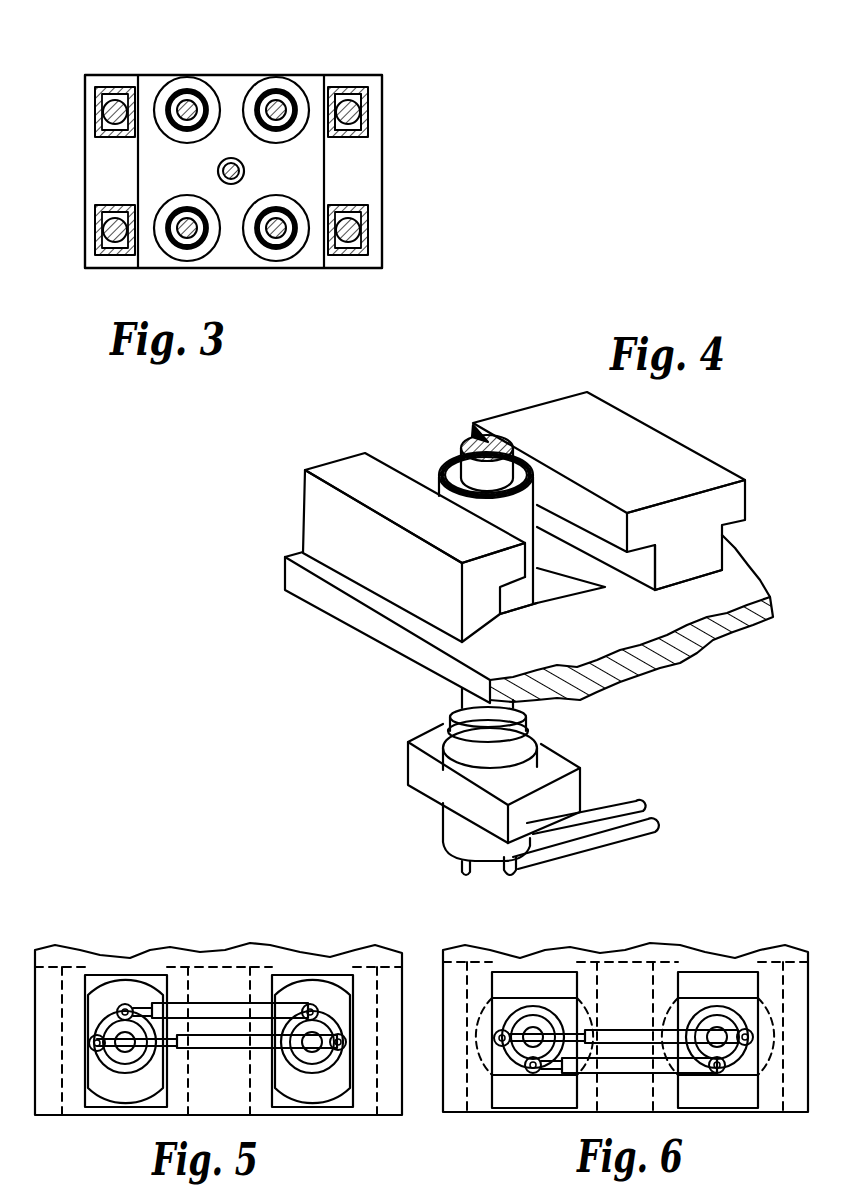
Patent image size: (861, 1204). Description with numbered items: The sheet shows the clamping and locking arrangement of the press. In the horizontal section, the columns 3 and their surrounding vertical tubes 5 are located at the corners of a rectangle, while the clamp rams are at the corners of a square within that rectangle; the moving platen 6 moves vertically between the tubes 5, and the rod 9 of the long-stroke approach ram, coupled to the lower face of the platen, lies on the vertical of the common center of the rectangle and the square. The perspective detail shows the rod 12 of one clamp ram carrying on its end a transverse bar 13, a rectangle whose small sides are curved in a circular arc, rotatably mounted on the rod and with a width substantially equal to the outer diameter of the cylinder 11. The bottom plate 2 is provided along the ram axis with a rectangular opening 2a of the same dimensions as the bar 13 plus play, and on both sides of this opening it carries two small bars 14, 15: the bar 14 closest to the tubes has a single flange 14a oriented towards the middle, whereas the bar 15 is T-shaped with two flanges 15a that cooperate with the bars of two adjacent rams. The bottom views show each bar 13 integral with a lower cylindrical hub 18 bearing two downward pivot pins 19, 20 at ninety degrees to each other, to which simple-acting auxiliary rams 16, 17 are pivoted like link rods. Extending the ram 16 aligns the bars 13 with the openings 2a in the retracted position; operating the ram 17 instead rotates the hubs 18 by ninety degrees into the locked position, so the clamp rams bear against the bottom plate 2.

In FIG. 4, the bottom plate 2 is at (370, 620).
In FIG. 5, the bottom plate 2 is at (295, 962).
In FIG. 6, the bottom plate 2 is at (662, 953).
In FIG. 4, the rectangular opening 2a is at (567, 599).
In FIG. 5, the rectangular opening 2a is at (120, 976).
In FIG. 6, the rectangular opening 2a is at (520, 969).
In FIG. 3, the column 3 is at (358, 125).
In FIG. 3, the vertical tube 5 is at (353, 89).
In FIG. 3, the moving platen 6 is at (236, 87).
In FIG. 3, the rod of approach ram 9 is at (233, 184).
In FIG. 3, the cylinder of clamp ram 11 is at (183, 101).
In FIG. 4, the cylinder of clamp ram 11 is at (437, 491).
In FIG. 3, the rod of clamp ram 12 is at (189, 104).
In FIG. 4, the rod of clamp ram 12 is at (474, 427).
In FIG. 4, the transverse bar 13 is at (557, 768).
In FIG. 5, the transverse bar 13 is at (325, 992).
In FIG. 6, the transverse bar 13 is at (563, 1002).
In FIG. 4, the small bar 14 is at (320, 505).
In FIG. 4, the flange 14a is at (510, 567).
In FIG. 4, the small bar 15 is at (707, 508).
In FIG. 4, the flange 15a is at (642, 543).
In FIG. 4, the auxiliary ram 16 is at (620, 812).
In FIG. 5, the auxiliary ram 16 is at (200, 1045).
In FIG. 6, the auxiliary ram 16 is at (610, 1068).
In FIG. 4, the auxiliary ram 17 is at (620, 833).
In FIG. 5, the auxiliary ram 17 is at (220, 1012).
In FIG. 6, the auxiliary ram 17 is at (620, 1035).
In FIG. 4, the cylindrical hub 18 is at (452, 820).
In FIG. 5, the cylindrical hub 18 is at (105, 1018).
In FIG. 6, the cylindrical hub 18 is at (512, 1058).
In FIG. 4, the pivot pin 19 is at (466, 867).
In FIG. 5, the pivot pin 19 is at (95, 1049).
In FIG. 6, the pivot pin 19 is at (533, 1073).
In FIG. 4, the pivot pin 20 is at (513, 873).
In FIG. 5, the pivot pin 20 is at (127, 1010).
In FIG. 6, the pivot pin 20 is at (502, 1030).